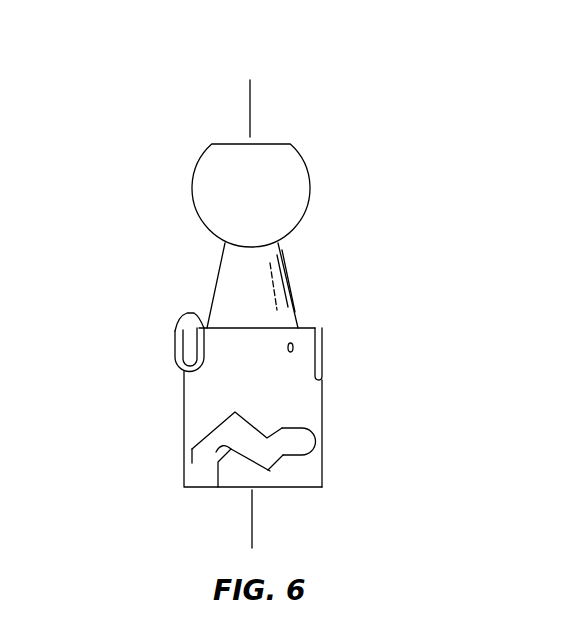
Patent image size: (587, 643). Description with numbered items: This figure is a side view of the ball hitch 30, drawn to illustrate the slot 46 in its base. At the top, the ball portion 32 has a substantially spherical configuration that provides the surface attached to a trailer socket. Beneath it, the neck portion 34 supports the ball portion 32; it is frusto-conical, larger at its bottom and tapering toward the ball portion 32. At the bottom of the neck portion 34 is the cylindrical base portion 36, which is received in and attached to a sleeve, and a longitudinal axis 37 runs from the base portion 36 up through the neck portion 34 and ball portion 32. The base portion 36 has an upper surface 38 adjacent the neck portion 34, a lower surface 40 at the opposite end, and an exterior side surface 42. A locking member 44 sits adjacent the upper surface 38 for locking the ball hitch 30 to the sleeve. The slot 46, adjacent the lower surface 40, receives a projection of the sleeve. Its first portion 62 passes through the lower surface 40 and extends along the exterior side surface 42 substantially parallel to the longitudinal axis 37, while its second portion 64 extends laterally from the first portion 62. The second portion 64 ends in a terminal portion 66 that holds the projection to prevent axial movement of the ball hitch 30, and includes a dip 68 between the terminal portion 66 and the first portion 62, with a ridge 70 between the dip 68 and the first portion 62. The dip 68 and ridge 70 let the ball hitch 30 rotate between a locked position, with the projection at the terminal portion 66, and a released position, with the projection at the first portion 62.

The ball hitch 30 is at (353, 246).
The ball portion 32 is at (292, 180).
The neck portion 34 is at (220, 265).
The base portion 36 is at (184, 417).
The longitudinal axis 37 is at (250, 108).
The upper surface 38 is at (315, 328).
The lower surface 40 is at (297, 488).
The exterior side surface 42 is at (323, 382).
The locking member 44 is at (175, 349).
The slot 46 is at (202, 458).
The first portion 62 is at (191, 465).
The second portion 64 is at (267, 448).
The terminal portion 66 is at (317, 438).
The dip 68 is at (270, 471).
The ridge 70 is at (216, 452).